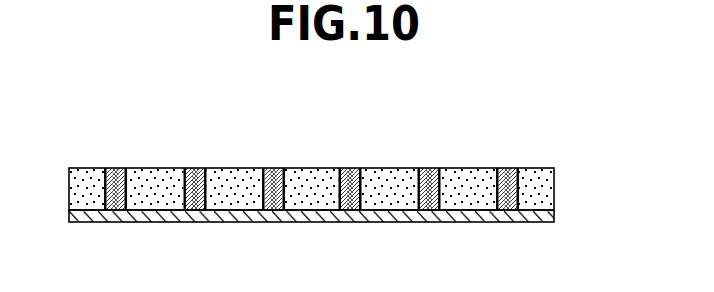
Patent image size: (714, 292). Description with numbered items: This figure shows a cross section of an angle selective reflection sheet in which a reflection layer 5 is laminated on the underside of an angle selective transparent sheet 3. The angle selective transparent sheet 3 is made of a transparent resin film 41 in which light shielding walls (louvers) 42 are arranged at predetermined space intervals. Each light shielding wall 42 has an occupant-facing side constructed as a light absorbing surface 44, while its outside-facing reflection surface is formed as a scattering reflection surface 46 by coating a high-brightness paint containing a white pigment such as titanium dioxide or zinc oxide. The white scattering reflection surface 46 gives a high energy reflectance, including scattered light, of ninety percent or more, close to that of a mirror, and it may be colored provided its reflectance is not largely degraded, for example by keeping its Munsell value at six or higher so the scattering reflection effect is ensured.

The angle selective transparent sheet 3 is at (348, 147).
The reflection layer 5 is at (530, 222).
The transparent resin film 41 is at (152, 168).
The light shielding wall (louver) 42 is at (352, 168).
The light absorbing surface 44 is at (362, 180).
The scattering reflection surface 46 is at (339, 180).